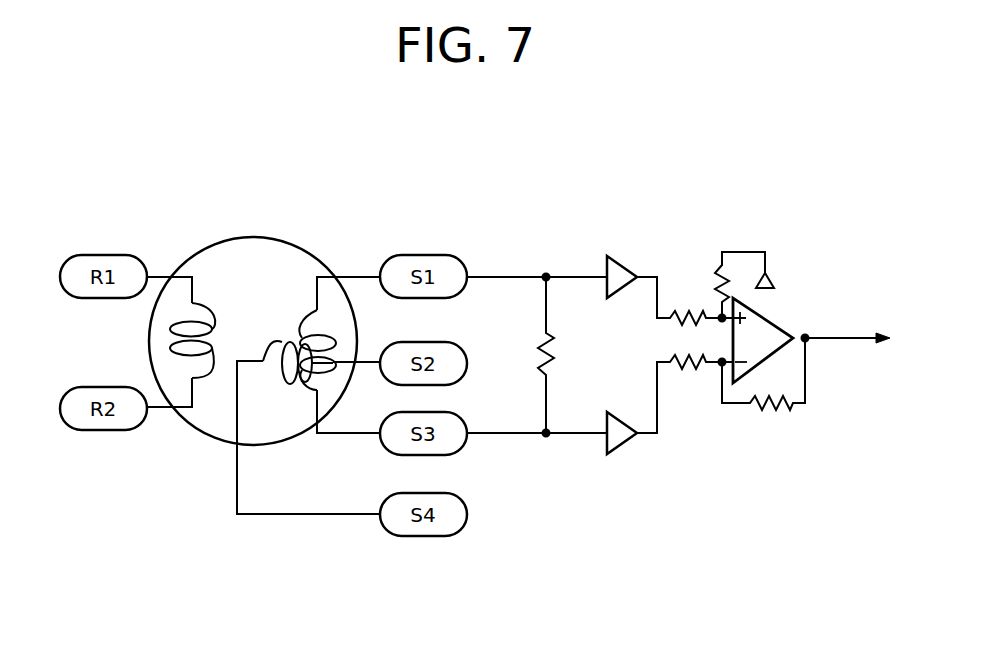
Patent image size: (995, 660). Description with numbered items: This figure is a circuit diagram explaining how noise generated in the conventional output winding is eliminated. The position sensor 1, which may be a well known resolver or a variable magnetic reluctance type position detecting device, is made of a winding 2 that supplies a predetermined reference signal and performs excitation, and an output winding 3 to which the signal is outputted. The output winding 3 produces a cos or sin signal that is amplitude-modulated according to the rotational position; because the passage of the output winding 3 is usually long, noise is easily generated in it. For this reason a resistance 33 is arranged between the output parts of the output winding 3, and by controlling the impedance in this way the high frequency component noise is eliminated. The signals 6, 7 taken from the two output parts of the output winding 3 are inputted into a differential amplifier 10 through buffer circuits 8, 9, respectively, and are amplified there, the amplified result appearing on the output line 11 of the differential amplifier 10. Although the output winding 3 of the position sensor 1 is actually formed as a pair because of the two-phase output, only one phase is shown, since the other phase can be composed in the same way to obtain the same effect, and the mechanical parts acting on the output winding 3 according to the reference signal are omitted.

The position sensor 1 is at (284, 238).
The winding 2 is at (180, 367).
The output winding 3 is at (273, 373).
The signal 6 is at (508, 273).
The signal 7 is at (508, 437).
The buffer circuit 8 is at (627, 259).
The buffer circuit 9 is at (627, 447).
The differential amplifier 10 is at (752, 377).
The output line 11 is at (843, 343).
The resistance 33 is at (557, 358).